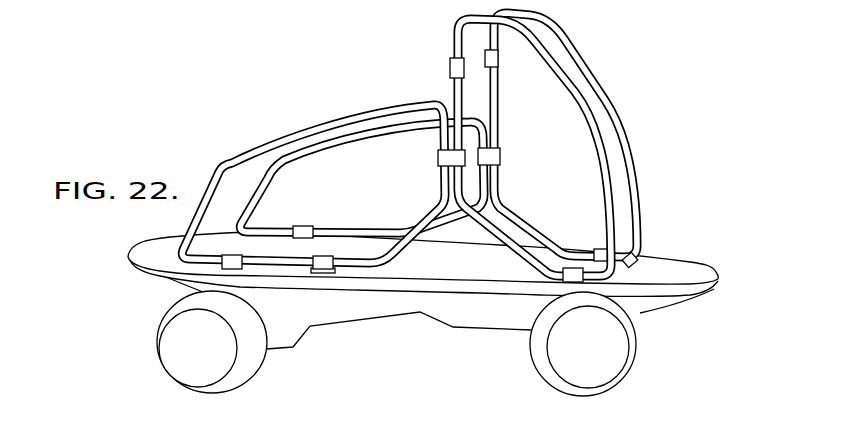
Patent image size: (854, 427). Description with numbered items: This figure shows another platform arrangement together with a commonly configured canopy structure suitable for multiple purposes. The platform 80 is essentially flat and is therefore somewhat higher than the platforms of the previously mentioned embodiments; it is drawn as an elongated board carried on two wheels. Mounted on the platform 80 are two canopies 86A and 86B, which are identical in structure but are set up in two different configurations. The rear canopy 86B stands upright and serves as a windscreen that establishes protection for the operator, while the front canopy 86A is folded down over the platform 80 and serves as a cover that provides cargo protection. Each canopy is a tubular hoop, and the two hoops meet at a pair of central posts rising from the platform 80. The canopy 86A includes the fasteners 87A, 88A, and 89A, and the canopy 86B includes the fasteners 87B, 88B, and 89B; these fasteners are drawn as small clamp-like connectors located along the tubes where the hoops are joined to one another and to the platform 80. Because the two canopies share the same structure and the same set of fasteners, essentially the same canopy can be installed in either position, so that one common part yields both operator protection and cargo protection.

The platform 80 is at (672, 252).
The canopy 86A is at (306, 131).
The canopy 86B is at (610, 81).
The fastener 87A is at (226, 268).
The fastener 87B is at (448, 68).
The fastener 88A is at (328, 274).
The fastener 88B is at (498, 166).
The fastener 89A is at (438, 160).
The fastener 89B is at (565, 281).